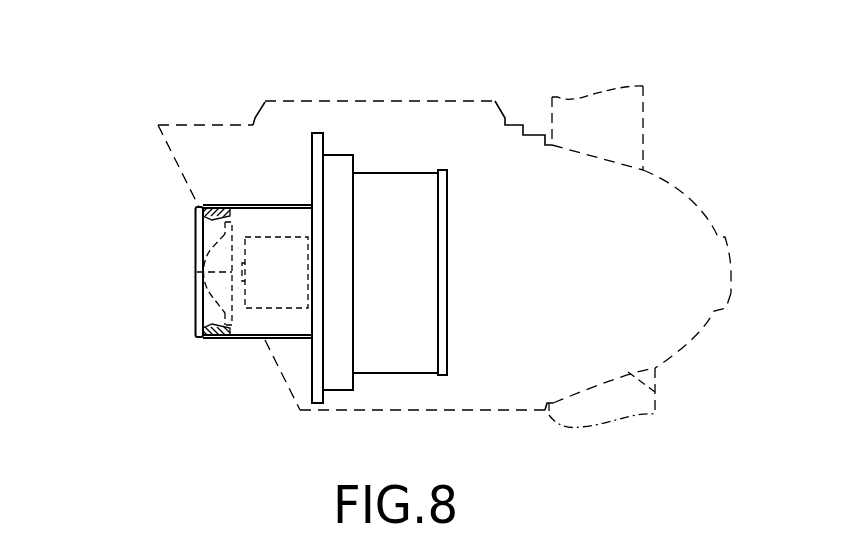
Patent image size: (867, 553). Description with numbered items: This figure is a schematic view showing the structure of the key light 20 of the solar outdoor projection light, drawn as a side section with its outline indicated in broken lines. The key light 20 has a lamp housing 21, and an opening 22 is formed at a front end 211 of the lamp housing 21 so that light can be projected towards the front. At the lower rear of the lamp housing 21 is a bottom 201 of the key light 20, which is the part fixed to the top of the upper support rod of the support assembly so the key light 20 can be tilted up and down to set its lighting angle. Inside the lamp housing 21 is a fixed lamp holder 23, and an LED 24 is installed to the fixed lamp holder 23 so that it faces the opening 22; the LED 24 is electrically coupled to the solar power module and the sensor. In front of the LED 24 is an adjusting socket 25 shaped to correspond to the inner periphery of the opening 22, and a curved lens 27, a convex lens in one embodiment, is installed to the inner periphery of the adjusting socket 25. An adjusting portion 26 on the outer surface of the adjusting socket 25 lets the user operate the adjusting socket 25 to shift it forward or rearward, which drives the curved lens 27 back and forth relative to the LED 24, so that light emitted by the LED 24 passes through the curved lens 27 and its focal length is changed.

The key light 20 is at (128, 160).
The lamp housing 21 is at (358, 101).
The front end 211 is at (192, 125).
The opening 22 is at (282, 378).
The fixed lamp holder 23 is at (272, 310).
The LED 24 is at (232, 272).
The adjusting socket 25 is at (247, 205).
The adjusting portion 26 is at (203, 207).
The curved lens 27 is at (204, 243).
The bottom 201 is at (655, 392).